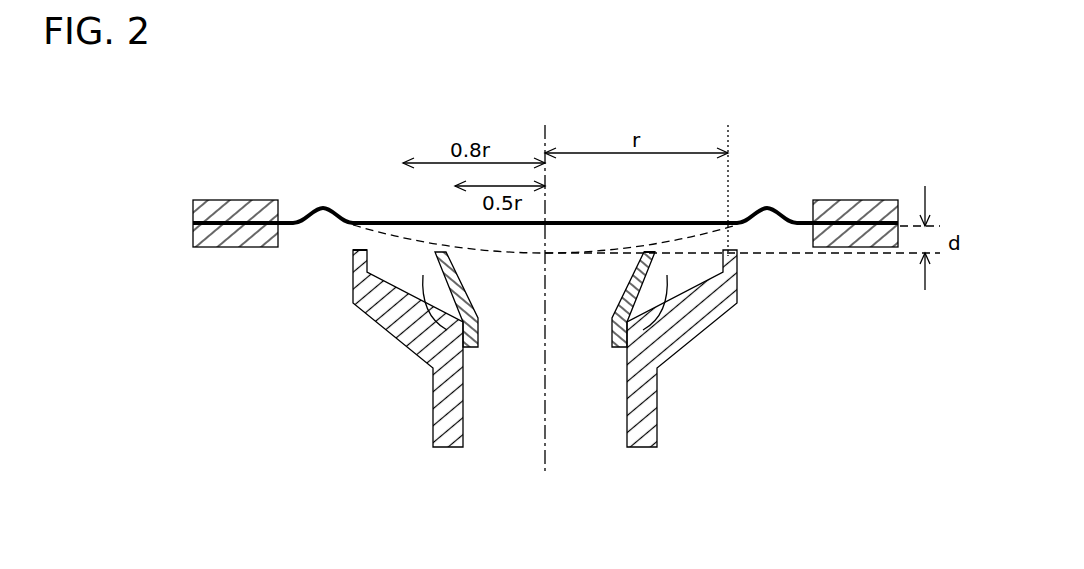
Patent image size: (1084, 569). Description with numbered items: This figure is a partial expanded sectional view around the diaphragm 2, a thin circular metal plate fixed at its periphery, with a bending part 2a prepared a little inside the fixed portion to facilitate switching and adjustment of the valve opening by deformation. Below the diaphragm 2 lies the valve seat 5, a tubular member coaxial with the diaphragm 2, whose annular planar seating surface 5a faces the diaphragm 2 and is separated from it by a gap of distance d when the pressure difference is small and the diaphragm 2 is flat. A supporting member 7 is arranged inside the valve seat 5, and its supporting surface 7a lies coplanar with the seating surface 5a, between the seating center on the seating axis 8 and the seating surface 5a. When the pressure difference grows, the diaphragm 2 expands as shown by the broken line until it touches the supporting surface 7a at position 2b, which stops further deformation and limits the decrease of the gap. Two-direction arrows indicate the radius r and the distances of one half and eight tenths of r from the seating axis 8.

The diaphragm 2 is at (589, 221).
The bending part 2a is at (770, 208).
The position where the diaphragm can contact the supporting surface 2b is at (425, 297).
The valve seat 5 is at (658, 345).
The seating surface 5a is at (362, 250).
The supporting member 7 is at (647, 290).
The supporting surface 7a is at (648, 250).
The seating axis 8 is at (543, 455).